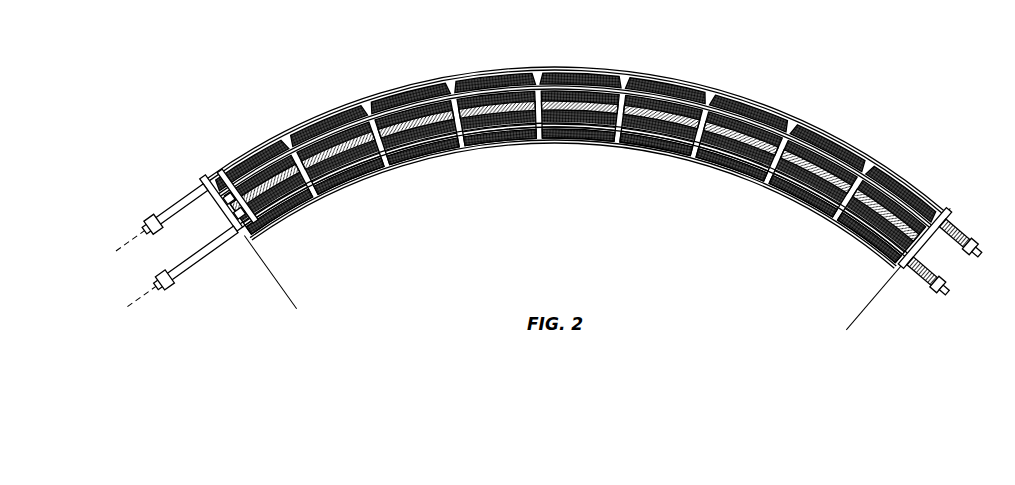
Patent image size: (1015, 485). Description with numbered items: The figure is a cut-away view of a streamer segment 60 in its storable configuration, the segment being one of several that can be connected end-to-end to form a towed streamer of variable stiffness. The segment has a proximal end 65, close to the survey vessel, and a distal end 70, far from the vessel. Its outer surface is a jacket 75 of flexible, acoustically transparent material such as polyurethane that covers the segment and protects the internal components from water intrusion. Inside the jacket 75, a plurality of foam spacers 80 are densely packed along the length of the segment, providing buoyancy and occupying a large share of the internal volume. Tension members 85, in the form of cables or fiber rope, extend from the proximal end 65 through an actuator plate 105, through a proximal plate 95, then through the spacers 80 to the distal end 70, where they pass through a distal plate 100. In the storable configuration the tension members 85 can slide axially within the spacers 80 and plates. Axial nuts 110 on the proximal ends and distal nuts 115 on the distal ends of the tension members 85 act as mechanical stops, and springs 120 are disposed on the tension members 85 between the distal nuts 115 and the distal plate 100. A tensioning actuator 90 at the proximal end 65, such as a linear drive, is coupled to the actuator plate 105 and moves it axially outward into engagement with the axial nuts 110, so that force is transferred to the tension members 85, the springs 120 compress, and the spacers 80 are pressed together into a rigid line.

The streamer segment 60 is at (812, 98).
The proximal end 65 is at (148, 172).
The distal end 70 is at (900, 290).
The jacket 75 is at (511, 68).
The spacers 80 is at (258, 156).
The tension members 85 is at (368, 108).
The tensioning actuator 90 is at (214, 225).
The proximal plate 95 is at (206, 178).
The distal plate 100 is at (947, 216).
The actuator plate 105 is at (192, 218).
The axial nuts 110 is at (156, 212).
The distal nuts 115 is at (976, 249).
The springs 120 is at (964, 232).